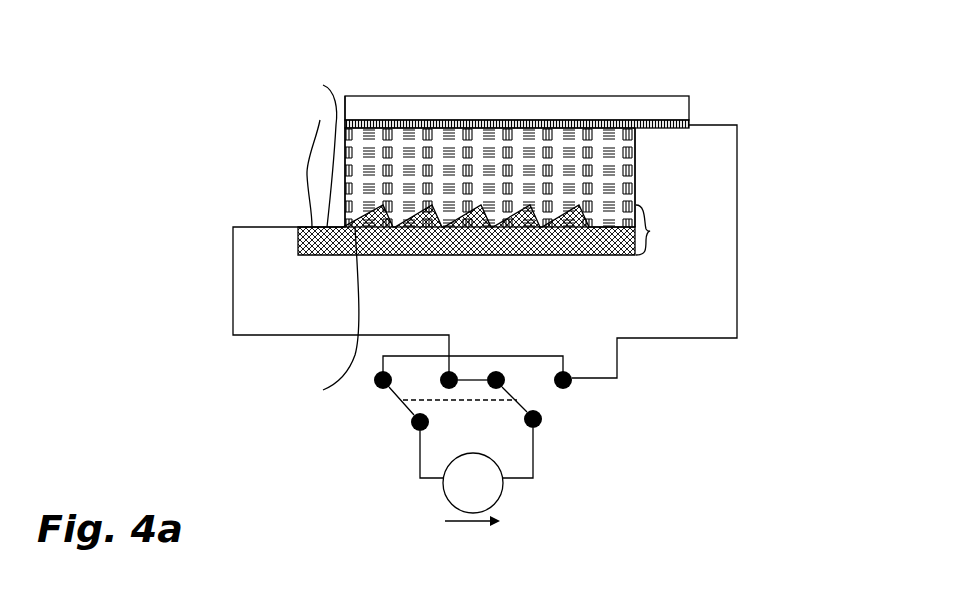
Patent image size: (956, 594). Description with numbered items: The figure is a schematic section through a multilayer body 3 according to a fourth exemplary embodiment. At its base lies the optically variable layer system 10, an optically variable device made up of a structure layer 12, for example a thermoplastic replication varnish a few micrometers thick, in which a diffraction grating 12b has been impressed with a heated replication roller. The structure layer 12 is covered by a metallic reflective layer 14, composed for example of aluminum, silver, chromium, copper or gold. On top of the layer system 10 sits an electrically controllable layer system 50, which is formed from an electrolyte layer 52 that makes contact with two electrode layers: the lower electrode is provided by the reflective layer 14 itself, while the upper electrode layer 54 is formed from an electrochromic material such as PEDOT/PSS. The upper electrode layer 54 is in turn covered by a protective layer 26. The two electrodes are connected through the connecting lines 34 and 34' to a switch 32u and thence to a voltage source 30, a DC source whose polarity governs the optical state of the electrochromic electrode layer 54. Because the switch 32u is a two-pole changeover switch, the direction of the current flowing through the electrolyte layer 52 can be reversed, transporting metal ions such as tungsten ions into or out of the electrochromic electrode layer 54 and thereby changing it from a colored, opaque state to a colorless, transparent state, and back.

The multilayer body 3 is at (186, 174).
The layer system 10 is at (658, 230).
The structure layer 12 is at (587, 257).
The diffraction grating 12b is at (328, 327).
The reflective layer 14 is at (313, 143).
The protective layer 26 is at (494, 103).
The voltage source 30 is at (439, 500).
The switch 32u is at (556, 403).
The connecting line 34 is at (334, 261).
The connecting line 34' is at (703, 251).
The electrically controllable layer system 50 is at (294, 173).
The electrolyte layer 52 is at (635, 177).
The upper electrode layer 54 is at (690, 123).